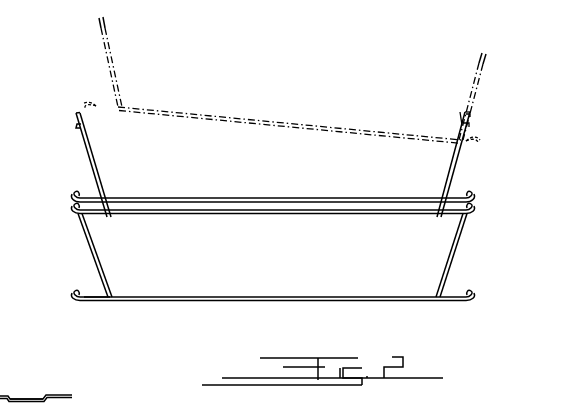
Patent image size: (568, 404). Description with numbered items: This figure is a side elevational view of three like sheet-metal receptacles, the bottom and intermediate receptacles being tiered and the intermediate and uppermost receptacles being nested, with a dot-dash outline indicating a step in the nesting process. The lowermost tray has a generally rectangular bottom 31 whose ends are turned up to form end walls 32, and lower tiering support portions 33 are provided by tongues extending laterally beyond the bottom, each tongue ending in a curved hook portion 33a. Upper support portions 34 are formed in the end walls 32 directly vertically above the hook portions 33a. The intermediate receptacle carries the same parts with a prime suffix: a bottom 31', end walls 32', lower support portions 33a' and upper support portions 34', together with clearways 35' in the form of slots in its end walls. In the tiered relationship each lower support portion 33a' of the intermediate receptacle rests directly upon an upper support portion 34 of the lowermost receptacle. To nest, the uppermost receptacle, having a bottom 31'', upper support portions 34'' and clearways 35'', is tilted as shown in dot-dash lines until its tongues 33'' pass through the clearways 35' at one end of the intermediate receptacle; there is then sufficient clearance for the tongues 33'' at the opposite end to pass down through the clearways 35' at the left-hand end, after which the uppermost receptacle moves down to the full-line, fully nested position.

The bottom 31 is at (273, 287).
The bottom of intermediate receptacle 31' is at (273, 195).
The bottom of uppermost receptacle 31'' is at (283, 109).
The end wall 32 is at (101, 256).
The end wall of intermediate receptacle 32' is at (81, 165).
The lower tiering support portion 33 is at (100, 311).
The curved hook portion 33a is at (64, 308).
The lower support portion of intermediate receptacle 33a' is at (50, 202).
The tongue of uppermost receptacle 33'' is at (291, 121).
The upper support portion 34 is at (59, 222).
The upper support portion of intermediate receptacle 34' is at (54, 126).
The upper support portion of uppermost receptacle 34'' is at (36, 384).
The clearway of intermediate receptacle 35' is at (478, 152).
The clearway of uppermost receptacle 35'' is at (35, 385).